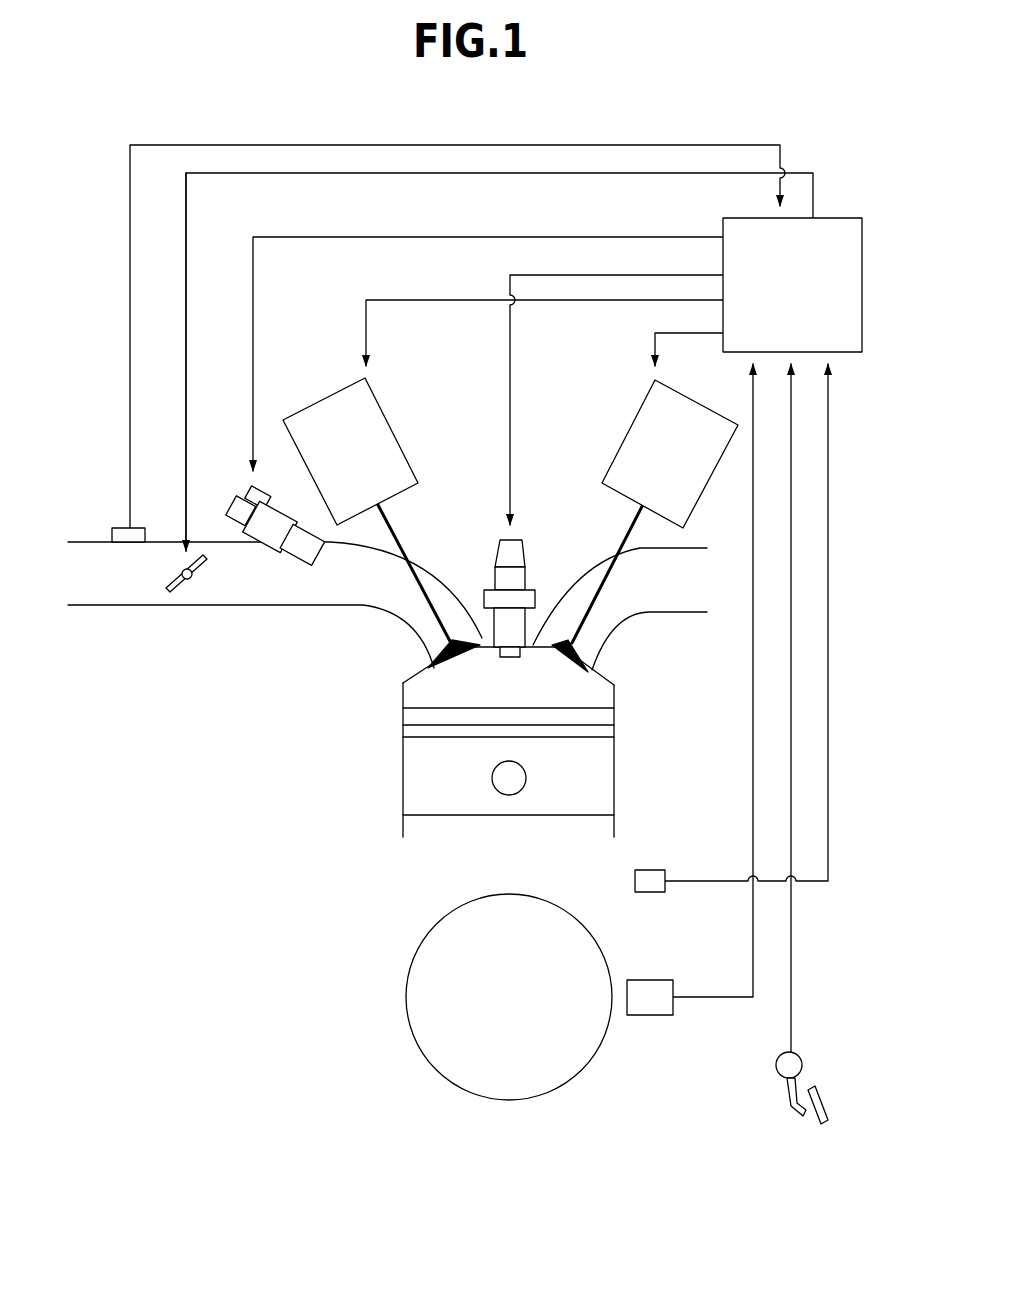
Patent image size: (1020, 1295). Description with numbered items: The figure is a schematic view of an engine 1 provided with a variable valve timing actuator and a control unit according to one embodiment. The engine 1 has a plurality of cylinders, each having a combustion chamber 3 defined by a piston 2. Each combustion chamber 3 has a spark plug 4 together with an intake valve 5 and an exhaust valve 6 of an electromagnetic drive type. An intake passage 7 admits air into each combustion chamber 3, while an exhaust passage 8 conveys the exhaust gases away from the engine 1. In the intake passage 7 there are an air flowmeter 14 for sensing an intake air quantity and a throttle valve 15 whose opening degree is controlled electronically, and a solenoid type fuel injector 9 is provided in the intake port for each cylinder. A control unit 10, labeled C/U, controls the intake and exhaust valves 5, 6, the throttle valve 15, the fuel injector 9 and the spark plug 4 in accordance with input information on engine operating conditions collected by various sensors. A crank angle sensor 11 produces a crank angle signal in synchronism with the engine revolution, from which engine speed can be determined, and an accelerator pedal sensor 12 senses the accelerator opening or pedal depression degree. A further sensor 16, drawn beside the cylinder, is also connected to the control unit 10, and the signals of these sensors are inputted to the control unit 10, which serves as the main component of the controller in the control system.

The engine 1 is at (358, 740).
The piston 2 is at (587, 783).
The combustion chamber 3 is at (600, 696).
The spark plug 4 is at (530, 577).
The intake valve 5 is at (400, 537).
The exhaust valve 6 is at (618, 538).
The intake passage 7 is at (277, 607).
The exhaust passage 8 is at (671, 598).
The fuel injector 9 is at (243, 500).
The control unit 10 is at (833, 218).
The crank angle sensor 11 is at (647, 980).
The accelerator pedal sensor 12 is at (777, 1065).
The air flowmeter 14 is at (140, 528).
The throttle valve 15 is at (178, 594).
The engine temperature sensor 16 is at (648, 870).